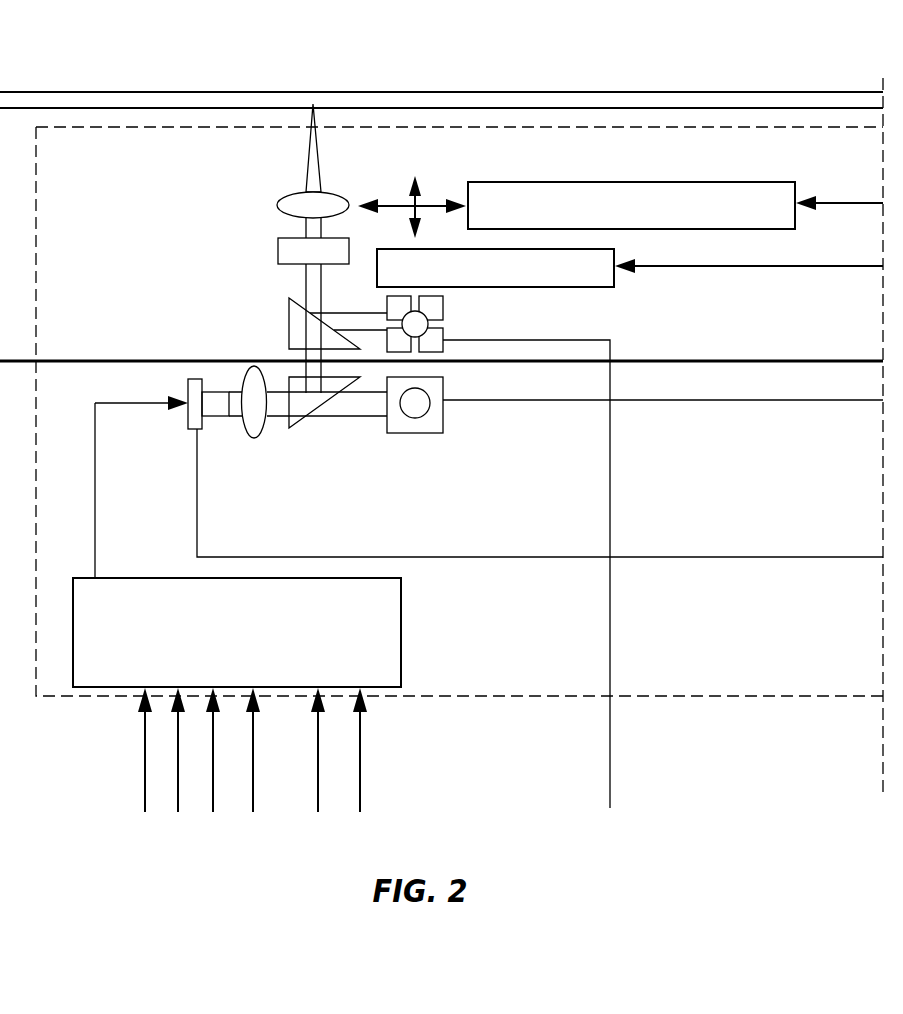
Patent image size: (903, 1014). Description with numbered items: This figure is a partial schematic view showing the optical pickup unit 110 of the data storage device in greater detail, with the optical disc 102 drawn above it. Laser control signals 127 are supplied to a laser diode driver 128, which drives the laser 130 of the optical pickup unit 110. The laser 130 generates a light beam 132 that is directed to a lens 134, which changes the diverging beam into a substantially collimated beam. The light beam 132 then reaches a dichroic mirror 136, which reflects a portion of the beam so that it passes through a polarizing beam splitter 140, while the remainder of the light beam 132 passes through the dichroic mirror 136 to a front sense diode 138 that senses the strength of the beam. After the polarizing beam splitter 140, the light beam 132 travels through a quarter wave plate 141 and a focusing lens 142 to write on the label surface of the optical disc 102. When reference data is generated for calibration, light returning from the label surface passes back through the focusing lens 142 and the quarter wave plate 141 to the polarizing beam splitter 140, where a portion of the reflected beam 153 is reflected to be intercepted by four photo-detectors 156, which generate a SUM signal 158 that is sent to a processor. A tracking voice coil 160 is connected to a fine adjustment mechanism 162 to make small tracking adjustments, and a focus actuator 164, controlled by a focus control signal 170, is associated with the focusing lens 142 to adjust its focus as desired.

The optical disc 102 is at (487, 92).
The optical pickup unit 110 is at (133, 112).
The laser control signals 127 is at (385, 757).
The laser diode driver 128 is at (401, 648).
The laser 130 is at (188, 380).
The light beam 132 is at (220, 416).
The lens 134 is at (254, 440).
The dichroic mirror 136 is at (289, 380).
The front sense diode 138 is at (443, 418).
The polarizing beam splitter 140 is at (289, 311).
The quarter wave plate 141 is at (278, 246).
The focusing lens 142 is at (278, 202).
The reflected beam 153 is at (323, 312).
The photo-detectors 156 is at (460, 307).
The SUM signal 158 is at (610, 488).
The tracking voice coil 160 is at (677, 182).
The fine adjustment mechanism 162 is at (452, 170).
The focus actuator 164 is at (614, 250).
The focus control signal 170 is at (762, 266).